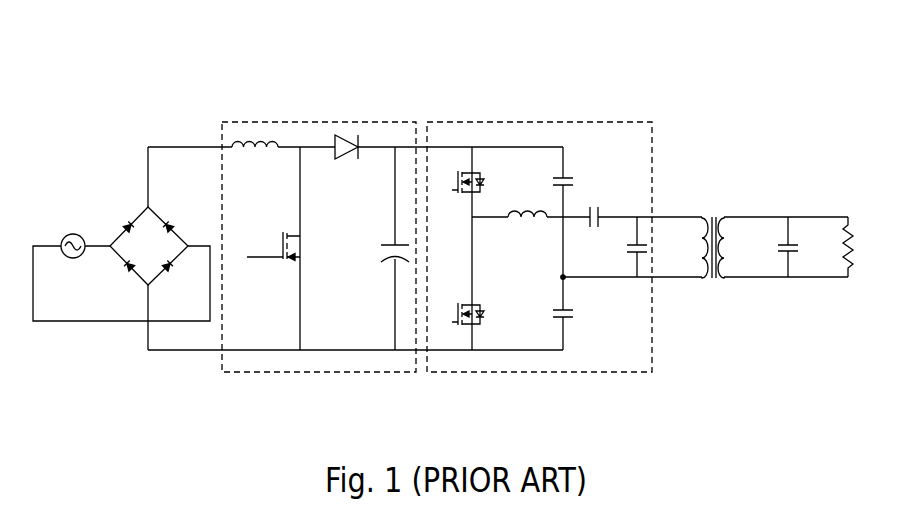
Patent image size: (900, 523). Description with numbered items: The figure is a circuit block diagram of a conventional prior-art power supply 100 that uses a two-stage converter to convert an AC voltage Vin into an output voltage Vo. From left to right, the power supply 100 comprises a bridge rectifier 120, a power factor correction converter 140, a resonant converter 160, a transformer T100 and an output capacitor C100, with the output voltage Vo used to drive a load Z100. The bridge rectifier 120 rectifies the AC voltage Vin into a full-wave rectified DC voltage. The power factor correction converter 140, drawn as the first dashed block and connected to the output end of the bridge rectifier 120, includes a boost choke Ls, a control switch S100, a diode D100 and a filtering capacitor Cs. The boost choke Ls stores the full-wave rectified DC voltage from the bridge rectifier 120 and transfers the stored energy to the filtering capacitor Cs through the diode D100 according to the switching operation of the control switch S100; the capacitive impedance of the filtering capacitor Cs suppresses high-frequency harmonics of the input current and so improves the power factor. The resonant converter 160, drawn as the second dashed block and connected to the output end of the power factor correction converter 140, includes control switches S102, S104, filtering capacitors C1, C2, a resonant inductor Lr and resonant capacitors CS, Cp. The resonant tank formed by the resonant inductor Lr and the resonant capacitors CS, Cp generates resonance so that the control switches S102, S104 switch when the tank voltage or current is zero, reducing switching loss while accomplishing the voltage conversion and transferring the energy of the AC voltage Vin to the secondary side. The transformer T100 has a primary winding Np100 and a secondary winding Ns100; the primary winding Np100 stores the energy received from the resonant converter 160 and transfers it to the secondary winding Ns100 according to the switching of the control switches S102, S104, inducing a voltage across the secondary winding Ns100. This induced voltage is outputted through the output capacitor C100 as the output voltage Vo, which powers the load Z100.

The power supply 100 is at (836, 37).
The bridge rectifier 120 is at (160, 211).
The power factor correction converter 140 is at (278, 372).
The resonant converter 160 is at (525, 372).
The control switch S100 is at (268, 248).
The diode D100 is at (347, 158).
The control switch S102 is at (458, 182).
The control switch S104 is at (458, 283).
The transformer T100 is at (712, 268).
The primary winding Np100 is at (700, 247).
The secondary winding Ns100 is at (726, 247).
The output capacitor C100 is at (777, 248).
The load Z100 is at (845, 247).
The AC voltage Vin is at (121, 263).
The boost choke Ls is at (255, 161).
The filtering capacitor Cs is at (377, 248).
The resonant inductor Lr is at (527, 200).
The filtering capacitor C1 is at (576, 212).
The filtering capacitor C2 is at (576, 313).
The resonant capacitor CS is at (608, 210).
The resonant capacitor Cp is at (624, 247).
The output voltage Vo is at (865, 248).